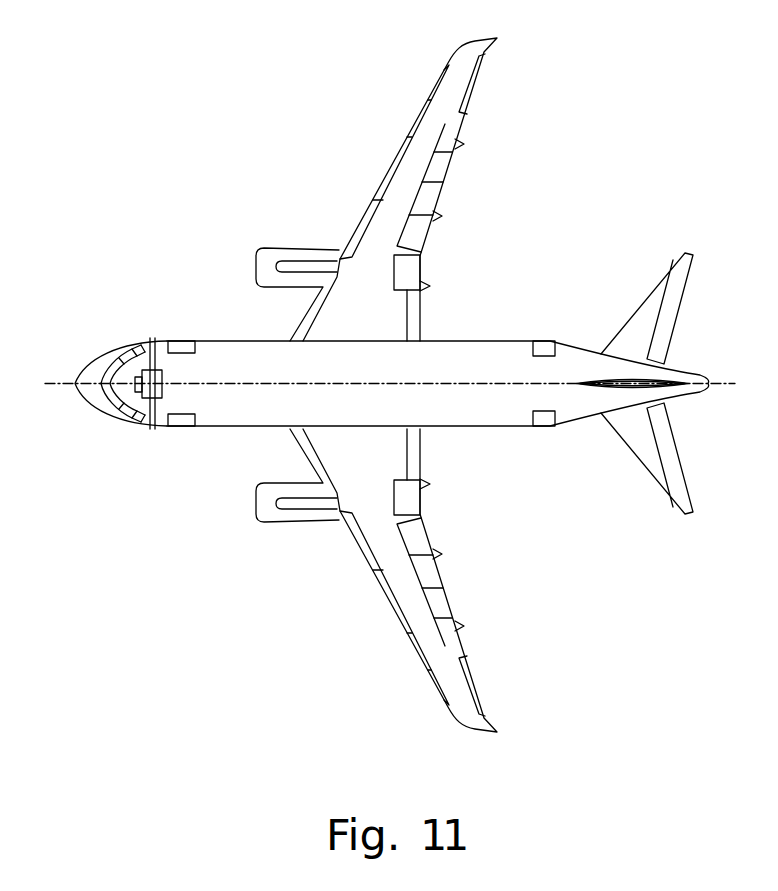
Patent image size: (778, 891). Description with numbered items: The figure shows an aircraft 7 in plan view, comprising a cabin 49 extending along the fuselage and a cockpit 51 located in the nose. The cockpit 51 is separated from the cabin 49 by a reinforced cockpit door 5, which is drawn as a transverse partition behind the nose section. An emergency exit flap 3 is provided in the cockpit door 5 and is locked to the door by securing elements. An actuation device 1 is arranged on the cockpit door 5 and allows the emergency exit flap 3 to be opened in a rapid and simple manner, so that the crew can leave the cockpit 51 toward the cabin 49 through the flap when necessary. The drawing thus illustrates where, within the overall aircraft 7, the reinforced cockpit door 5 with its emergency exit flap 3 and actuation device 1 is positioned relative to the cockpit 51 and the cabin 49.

The actuation device 1 is at (138, 347).
The emergency exit flap 3 is at (153, 377).
The cockpit door 5 is at (148, 429).
The aircraft 7 is at (513, 183).
The cabin 49 is at (481, 355).
The cockpit 51 is at (98, 368).